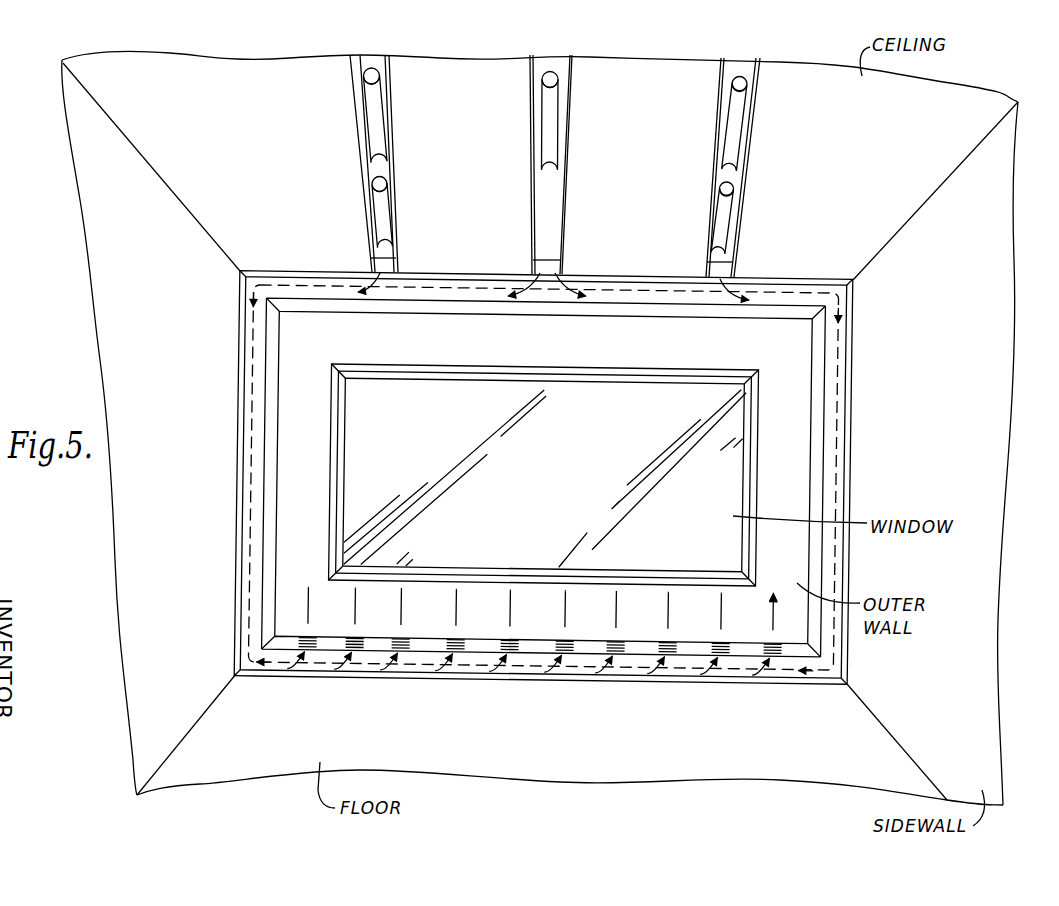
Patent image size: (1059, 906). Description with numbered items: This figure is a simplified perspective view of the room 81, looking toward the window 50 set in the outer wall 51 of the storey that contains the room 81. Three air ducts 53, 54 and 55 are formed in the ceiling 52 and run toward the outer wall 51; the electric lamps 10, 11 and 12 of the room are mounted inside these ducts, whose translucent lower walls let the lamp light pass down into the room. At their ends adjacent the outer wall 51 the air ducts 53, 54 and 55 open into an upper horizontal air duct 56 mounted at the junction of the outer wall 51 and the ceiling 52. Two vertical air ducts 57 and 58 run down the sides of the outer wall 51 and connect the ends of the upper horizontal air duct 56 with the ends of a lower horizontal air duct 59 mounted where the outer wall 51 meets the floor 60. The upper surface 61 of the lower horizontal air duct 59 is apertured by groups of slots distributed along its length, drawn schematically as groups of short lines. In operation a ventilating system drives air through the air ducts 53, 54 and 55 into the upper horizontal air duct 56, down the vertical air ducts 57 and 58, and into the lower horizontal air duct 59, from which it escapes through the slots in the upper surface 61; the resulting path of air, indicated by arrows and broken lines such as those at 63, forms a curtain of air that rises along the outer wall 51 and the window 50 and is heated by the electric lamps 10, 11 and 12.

The electric lamp 10 is at (386, 213).
The electric lamp 11 is at (379, 126).
The electric lamp 12 is at (557, 112).
The window 50 is at (524, 482).
The outer wall 51 is at (457, 350).
The ceiling 52 is at (240, 189).
The air duct 53 is at (355, 110).
The air duct 54 is at (534, 110).
The air duct 55 is at (752, 103).
The upper horizontal air duct 56 is at (584, 314).
The vertical air duct 57 is at (279, 334).
The vertical air duct 58 is at (816, 343).
The lower horizontal air duct 59 is at (531, 676).
The floor 60 is at (614, 728).
The upper surface 61 is at (464, 652).
The air path indication 63 is at (562, 283).
The room 81 is at (1020, 205).